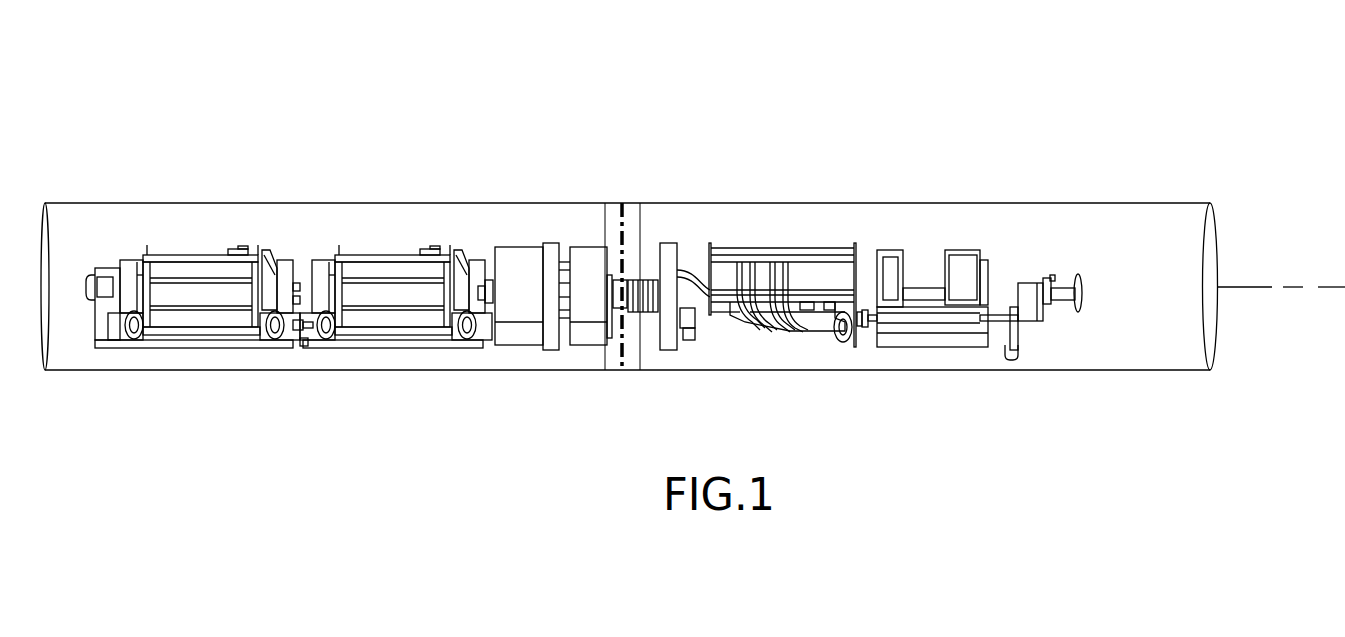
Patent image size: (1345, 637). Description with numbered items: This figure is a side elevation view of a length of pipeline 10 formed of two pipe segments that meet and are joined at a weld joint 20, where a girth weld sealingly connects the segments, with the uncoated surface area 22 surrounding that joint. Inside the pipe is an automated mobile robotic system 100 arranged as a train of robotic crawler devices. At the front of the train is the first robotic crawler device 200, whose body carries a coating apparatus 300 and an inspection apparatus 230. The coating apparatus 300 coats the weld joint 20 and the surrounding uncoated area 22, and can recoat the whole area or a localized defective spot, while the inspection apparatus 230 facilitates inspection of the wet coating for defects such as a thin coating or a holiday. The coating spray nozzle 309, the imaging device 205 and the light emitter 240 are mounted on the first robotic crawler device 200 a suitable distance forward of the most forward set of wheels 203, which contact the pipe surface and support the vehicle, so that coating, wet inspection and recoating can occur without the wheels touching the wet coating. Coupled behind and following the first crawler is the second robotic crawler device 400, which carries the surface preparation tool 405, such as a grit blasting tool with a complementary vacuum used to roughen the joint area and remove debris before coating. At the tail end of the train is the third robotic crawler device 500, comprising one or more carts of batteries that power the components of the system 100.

The automated mobile robotic system 100 is at (1162, 104).
The pipeline 10 is at (113, 203).
The third robotic crawler device 500 is at (348, 206).
The wheels 203 is at (275, 340).
The uncoated surface area 22 is at (643, 198).
The weld joint 20 is at (624, 356).
The second robotic crawler device 400 is at (759, 217).
The surface preparation tool 405 is at (807, 252).
The coating apparatus 300 is at (1089, 198).
The first robotic crawler device 200 is at (917, 362).
The inspection apparatus 230 is at (1083, 352).
The imaging device 205 is at (1050, 276).
The light emitter 240 is at (1054, 276).
The coating spray nozzle 309 is at (1088, 292).